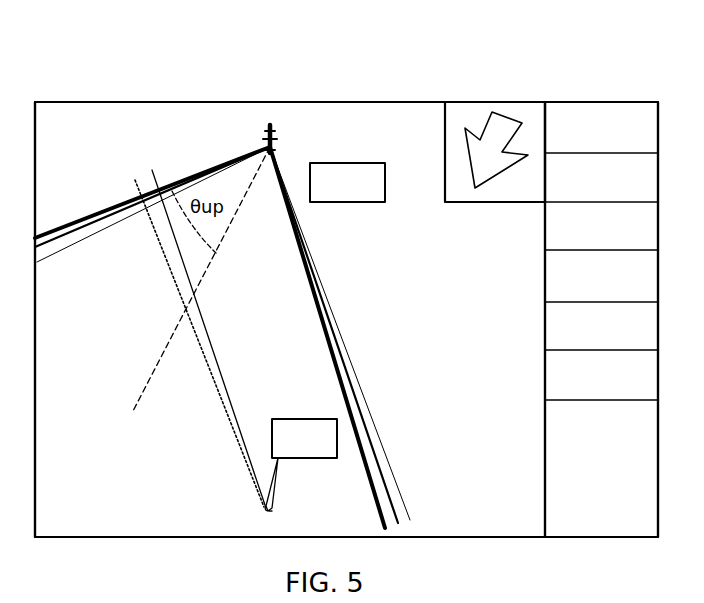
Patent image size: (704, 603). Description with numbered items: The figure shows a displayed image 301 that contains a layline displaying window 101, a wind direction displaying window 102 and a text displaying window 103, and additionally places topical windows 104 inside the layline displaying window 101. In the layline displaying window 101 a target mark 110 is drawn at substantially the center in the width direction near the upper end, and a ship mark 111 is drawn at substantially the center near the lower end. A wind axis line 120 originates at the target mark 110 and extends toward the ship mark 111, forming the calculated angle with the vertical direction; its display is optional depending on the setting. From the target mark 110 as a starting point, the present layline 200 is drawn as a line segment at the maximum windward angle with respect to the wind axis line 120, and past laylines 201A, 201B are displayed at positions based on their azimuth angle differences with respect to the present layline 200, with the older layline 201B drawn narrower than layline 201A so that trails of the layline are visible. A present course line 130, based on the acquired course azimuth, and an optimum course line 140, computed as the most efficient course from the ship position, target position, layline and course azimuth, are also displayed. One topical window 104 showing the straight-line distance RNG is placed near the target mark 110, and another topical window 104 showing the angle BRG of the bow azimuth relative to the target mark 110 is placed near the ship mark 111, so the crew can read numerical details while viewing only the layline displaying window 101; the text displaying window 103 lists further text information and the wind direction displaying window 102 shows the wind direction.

The layline displaying window 101 is at (36, 100).
The wind direction displaying window 102 is at (497, 100).
The text displaying window 103 is at (644, 100).
The topical window 104 is at (374, 161).
The target mark 110 is at (282, 138).
The ship mark 111 is at (265, 512).
The wind axis line 120 is at (135, 402).
The present course line 130 is at (222, 414).
The optimum course line 140 is at (210, 334).
The present layline 200 is at (71, 216).
The past layline 201A is at (90, 230).
The past layline 201B is at (78, 252).
The displayed image 301 is at (610, 62).